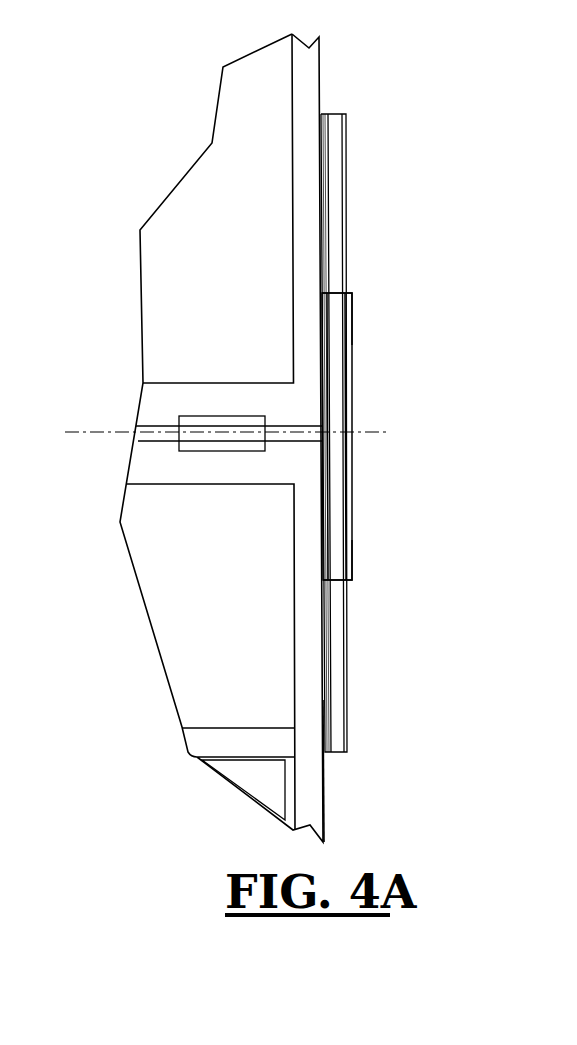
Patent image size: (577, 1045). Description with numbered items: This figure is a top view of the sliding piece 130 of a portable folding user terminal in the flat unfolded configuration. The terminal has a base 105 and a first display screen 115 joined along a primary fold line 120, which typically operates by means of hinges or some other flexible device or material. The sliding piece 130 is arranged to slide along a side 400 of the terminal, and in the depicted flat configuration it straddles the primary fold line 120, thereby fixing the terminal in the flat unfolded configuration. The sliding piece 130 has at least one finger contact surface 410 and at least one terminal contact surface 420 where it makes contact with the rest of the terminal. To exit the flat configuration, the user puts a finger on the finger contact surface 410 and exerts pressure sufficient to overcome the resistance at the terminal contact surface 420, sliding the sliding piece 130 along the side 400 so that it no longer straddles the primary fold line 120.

The base 105 is at (165, 465).
The first display screen 115 is at (260, 314).
The primary fold line 120 is at (383, 430).
The sliding piece 130 is at (337, 520).
The side 400 is at (325, 792).
The finger contact surface 410 is at (352, 340).
The terminal contact surface 420 is at (347, 580).